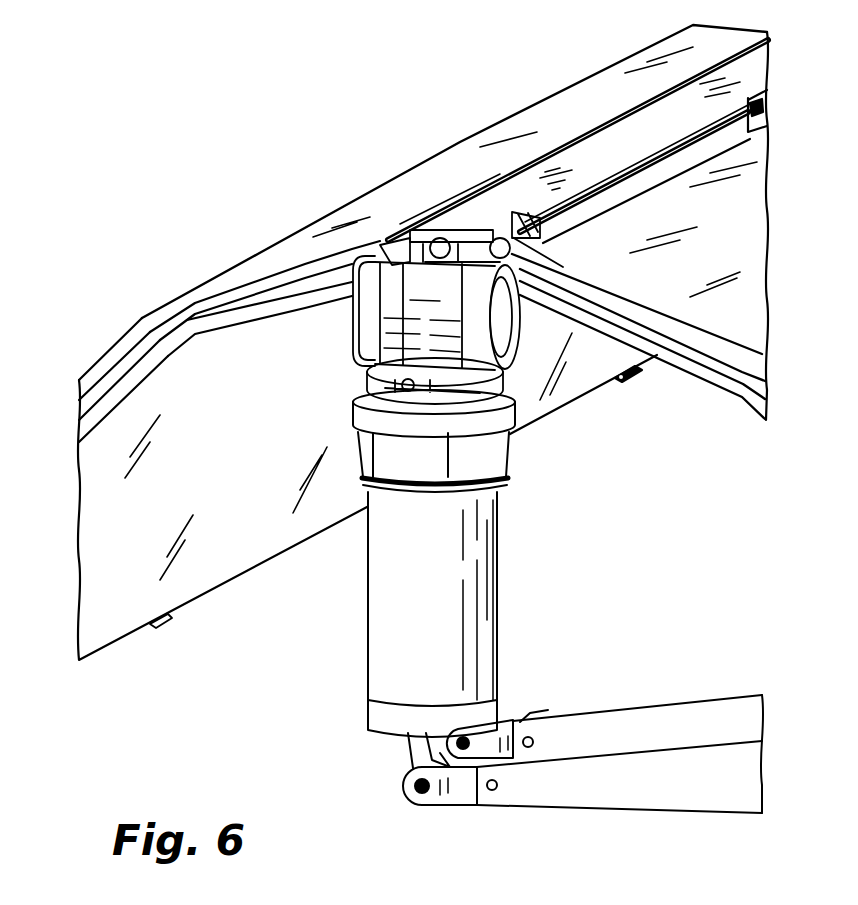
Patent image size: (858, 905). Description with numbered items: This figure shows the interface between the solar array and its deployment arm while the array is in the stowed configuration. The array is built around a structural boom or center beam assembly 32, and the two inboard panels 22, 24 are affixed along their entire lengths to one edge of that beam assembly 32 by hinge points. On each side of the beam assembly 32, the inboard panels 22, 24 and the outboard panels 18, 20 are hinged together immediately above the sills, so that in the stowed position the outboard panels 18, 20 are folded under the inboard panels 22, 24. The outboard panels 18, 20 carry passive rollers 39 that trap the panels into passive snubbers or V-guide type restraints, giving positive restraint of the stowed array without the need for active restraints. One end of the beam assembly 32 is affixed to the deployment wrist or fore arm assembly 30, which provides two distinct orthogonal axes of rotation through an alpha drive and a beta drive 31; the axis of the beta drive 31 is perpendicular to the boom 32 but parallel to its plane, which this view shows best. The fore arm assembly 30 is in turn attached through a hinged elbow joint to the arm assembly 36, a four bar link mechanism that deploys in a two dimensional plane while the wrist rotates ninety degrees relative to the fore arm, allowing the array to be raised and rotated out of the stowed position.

The outboard panel 18 is at (120, 393).
The outboard panel 20 is at (450, 160).
The inboard panel 22 is at (730, 378).
The inboard panel 24 is at (750, 217).
The fore arm assembly 30 is at (378, 605).
The beta drive 31 is at (351, 374).
The center beam assembly 32 is at (580, 153).
The arm assembly 36 is at (547, 795).
The passive roller 39 is at (163, 623).